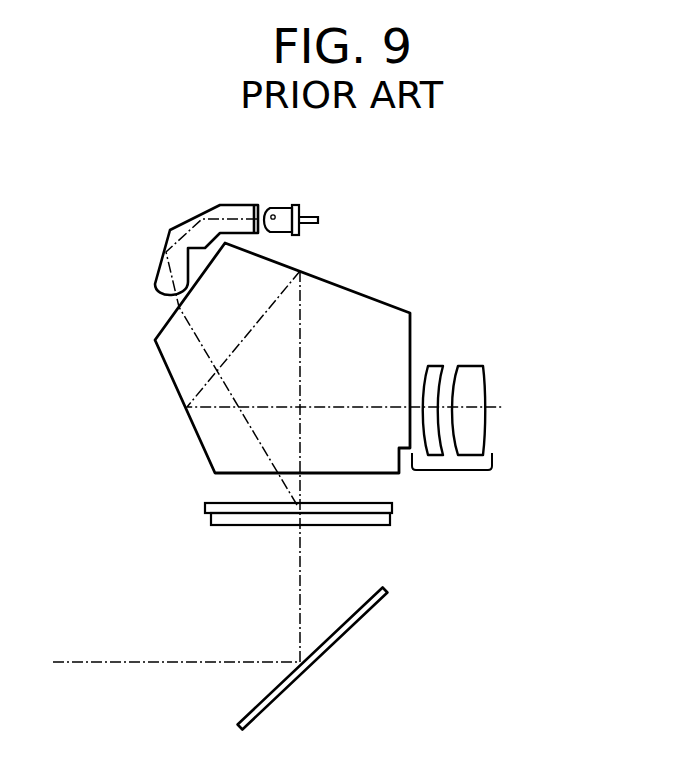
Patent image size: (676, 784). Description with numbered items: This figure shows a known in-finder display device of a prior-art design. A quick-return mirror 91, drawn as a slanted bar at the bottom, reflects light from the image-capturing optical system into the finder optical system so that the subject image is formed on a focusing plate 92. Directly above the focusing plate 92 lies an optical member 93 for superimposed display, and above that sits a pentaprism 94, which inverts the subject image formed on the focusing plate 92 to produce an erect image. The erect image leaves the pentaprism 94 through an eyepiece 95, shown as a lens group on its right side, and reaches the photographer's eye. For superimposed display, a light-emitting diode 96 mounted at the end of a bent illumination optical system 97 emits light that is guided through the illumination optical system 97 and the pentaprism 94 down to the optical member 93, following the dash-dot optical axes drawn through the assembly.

The quick-return mirror 91 is at (284, 693).
The focusing plate 92 is at (242, 526).
The optical member for superimposed display 93 is at (205, 507).
The pentaprism 94 is at (196, 430).
The eyepiece 95 is at (452, 471).
The light-emitting diode (LED) 96 is at (274, 216).
The illumination optical system 97 is at (195, 218).